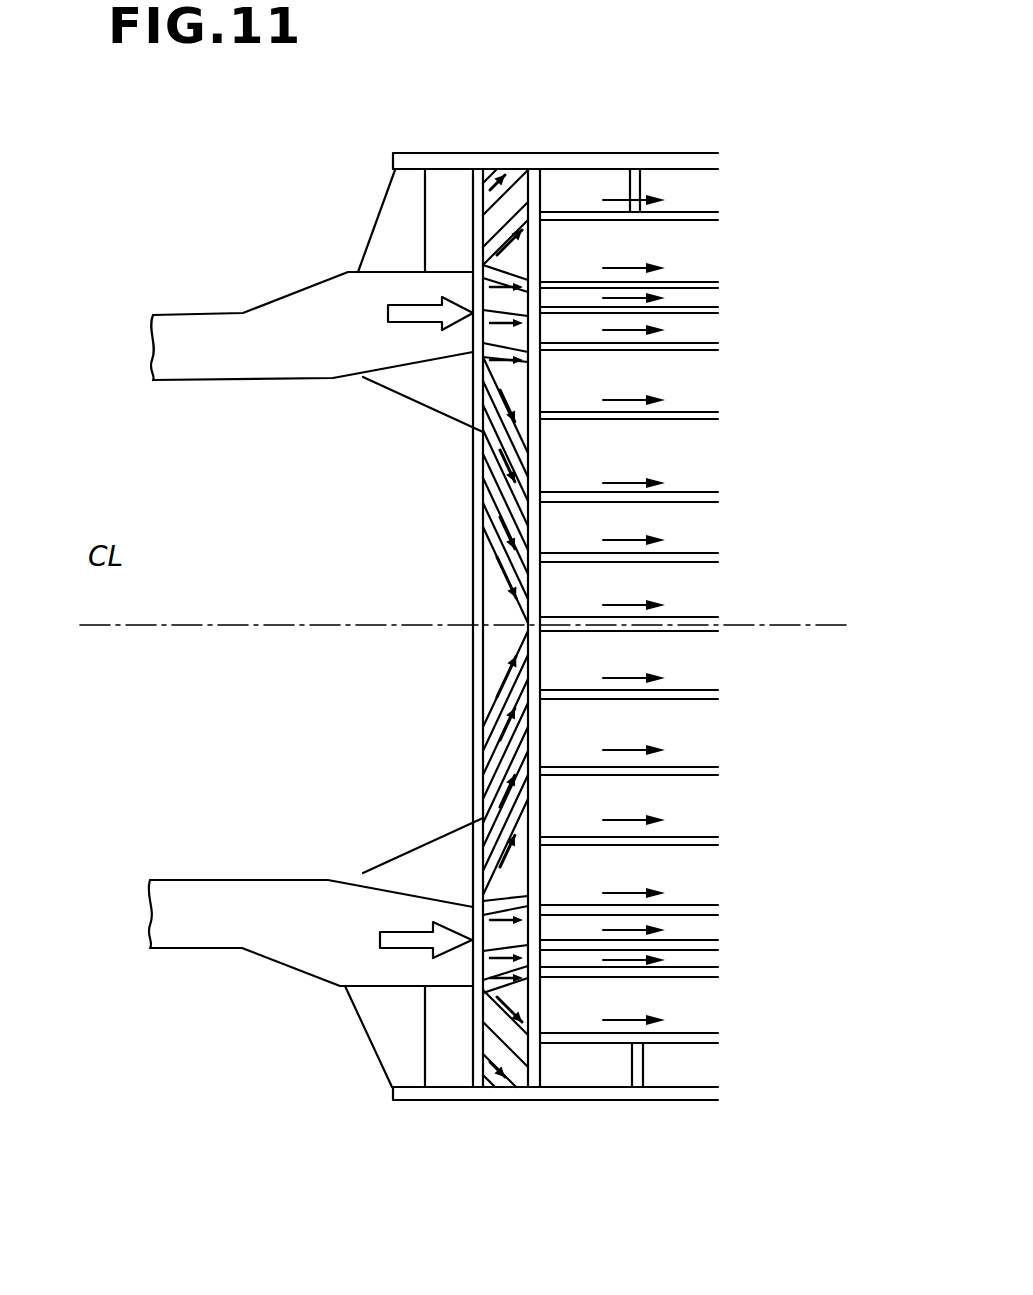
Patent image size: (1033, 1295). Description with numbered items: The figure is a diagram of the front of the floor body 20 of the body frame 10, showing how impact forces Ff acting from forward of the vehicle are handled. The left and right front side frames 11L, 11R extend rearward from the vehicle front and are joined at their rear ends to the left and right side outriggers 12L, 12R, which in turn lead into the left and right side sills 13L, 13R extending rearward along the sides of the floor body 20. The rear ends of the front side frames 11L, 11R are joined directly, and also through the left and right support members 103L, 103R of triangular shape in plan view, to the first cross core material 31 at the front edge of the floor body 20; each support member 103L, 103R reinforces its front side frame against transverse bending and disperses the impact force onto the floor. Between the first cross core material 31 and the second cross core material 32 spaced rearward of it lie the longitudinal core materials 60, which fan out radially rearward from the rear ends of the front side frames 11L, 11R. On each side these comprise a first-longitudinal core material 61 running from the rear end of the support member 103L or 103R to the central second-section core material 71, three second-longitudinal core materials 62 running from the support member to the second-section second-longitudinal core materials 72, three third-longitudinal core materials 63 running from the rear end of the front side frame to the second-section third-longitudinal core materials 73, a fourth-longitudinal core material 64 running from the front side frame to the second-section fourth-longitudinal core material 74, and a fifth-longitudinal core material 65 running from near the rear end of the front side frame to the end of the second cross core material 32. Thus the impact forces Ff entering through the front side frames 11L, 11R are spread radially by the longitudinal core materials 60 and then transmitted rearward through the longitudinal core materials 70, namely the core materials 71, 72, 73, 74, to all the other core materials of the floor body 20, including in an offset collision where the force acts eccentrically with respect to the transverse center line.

The body frame 10 is at (118, 210).
The right front side frame 11R is at (212, 330).
The left front side frame 11L is at (183, 935).
The right side outrigger 12R is at (383, 223).
The left side outrigger 12L is at (380, 1040).
The right side sill 13R is at (443, 160).
The left side sill 13L is at (605, 1101).
The floor body 20 is at (472, 560).
The first cross core material 31 is at (472, 602).
The second cross core material 32 is at (528, 643).
The longitudinal core materials 60 is at (488, 538).
The first-section first-longitudinal core material 61 is at (485, 517).
The first-section second-longitudinal core materials 62 is at (483, 467).
The first-section third-longitudinal core materials 63 is at (518, 330).
The first-section fourth-longitudinal core material 64 is at (535, 195).
The first-section fifth-longitudinal core material 65 is at (510, 180).
The longitudinal core materials 70 is at (725, 652).
The second-section first-longitudinal core material 71 is at (700, 618).
The second-section second-longitudinal core materials 72 is at (705, 419).
The second-section third-longitudinal core materials 73 is at (705, 288).
The second-section fourth-longitudinal core materials 74 is at (703, 221).
The right support member 103R is at (407, 383).
The left support member 103L is at (397, 875).